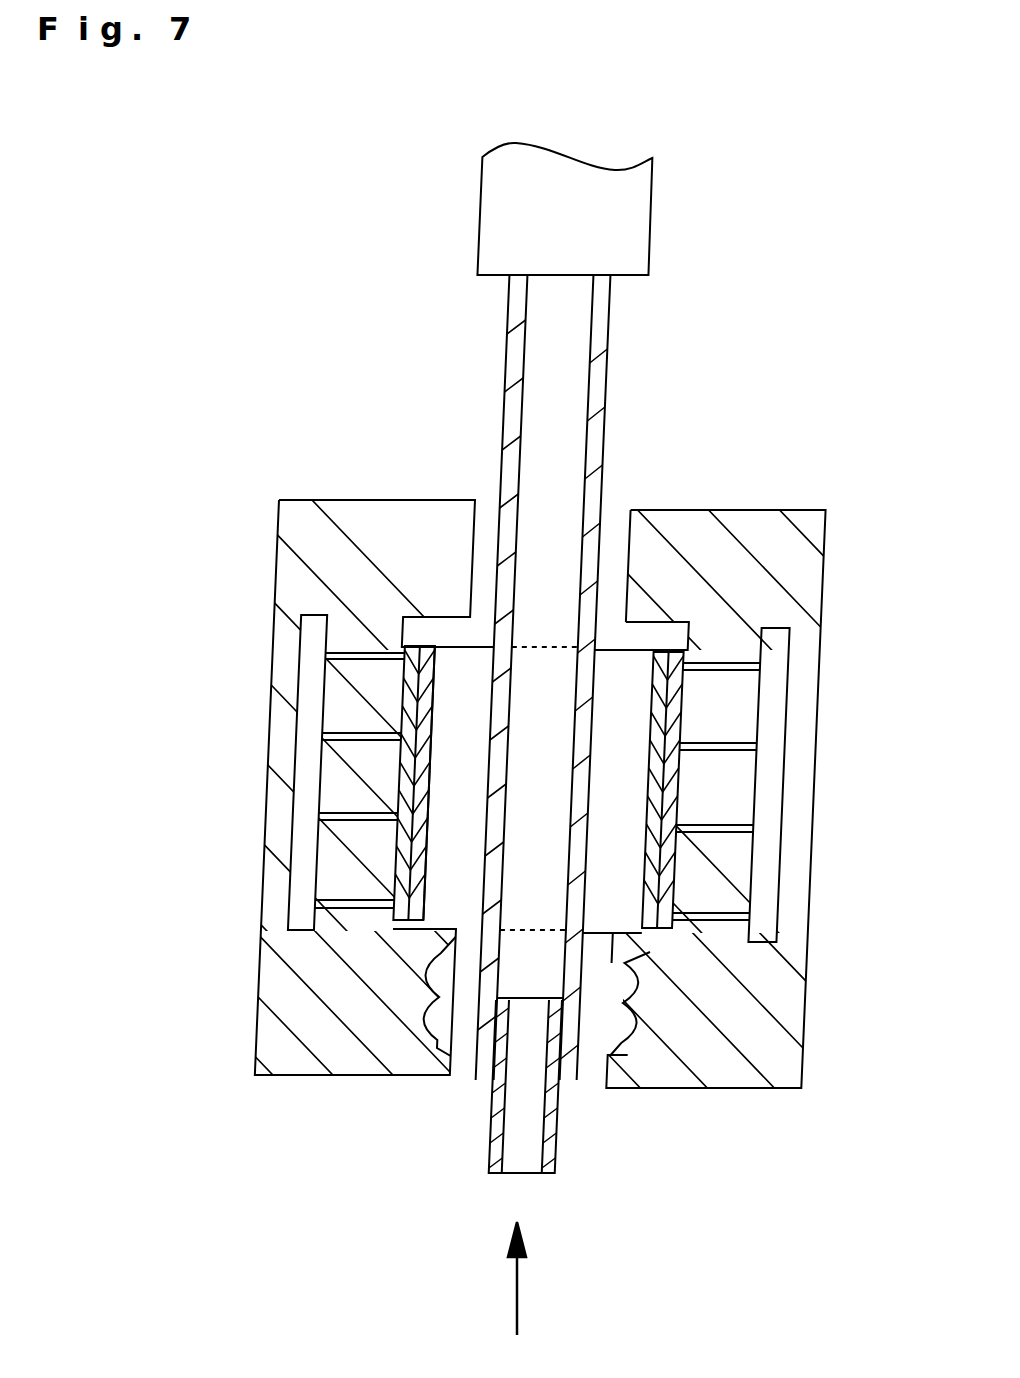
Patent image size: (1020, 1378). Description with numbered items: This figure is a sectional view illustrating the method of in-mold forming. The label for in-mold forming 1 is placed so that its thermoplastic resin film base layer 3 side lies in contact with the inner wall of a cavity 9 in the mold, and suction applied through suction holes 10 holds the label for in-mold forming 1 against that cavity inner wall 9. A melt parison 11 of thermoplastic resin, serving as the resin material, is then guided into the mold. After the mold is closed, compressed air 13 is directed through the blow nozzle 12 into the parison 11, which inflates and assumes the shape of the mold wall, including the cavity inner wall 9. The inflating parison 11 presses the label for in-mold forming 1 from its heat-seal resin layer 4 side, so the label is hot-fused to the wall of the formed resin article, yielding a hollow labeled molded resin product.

The label for in-mold forming 1 is at (434, 641).
The thermoplastic resin film base layer 3 is at (403, 845).
The heat-seal resin layer 4 is at (438, 749).
The cavity 9 is at (363, 908).
The suction holes 10 is at (706, 738).
The melt parison 11 is at (598, 366).
The blow nozzle 12 is at (557, 1152).
The compressed air 13 is at (517, 1292).